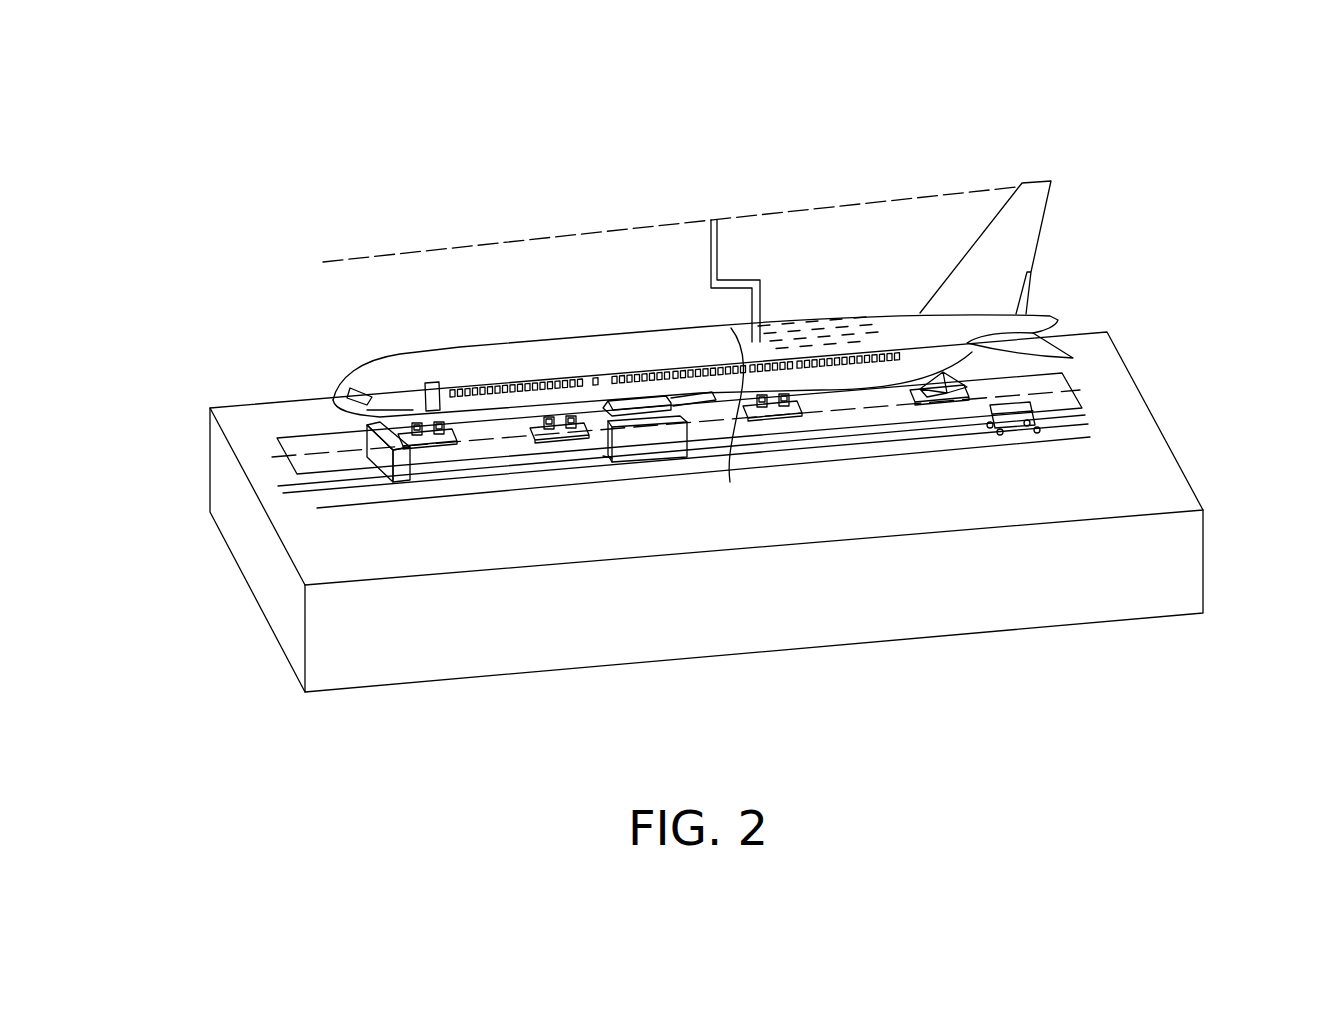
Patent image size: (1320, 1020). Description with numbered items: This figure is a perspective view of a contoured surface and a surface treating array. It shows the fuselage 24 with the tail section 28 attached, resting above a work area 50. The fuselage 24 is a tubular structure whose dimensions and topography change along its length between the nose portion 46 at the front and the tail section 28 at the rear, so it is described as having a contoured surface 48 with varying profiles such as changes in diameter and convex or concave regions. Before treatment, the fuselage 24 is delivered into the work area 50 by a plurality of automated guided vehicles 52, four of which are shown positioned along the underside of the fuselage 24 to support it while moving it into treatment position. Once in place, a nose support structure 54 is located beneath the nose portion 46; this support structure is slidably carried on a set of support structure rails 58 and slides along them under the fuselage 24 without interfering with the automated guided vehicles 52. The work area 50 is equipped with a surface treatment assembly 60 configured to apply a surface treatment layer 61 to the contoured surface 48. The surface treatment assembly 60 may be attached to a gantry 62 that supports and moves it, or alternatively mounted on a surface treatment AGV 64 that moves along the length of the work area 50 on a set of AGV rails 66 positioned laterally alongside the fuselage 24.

The fuselage 24 is at (343, 319).
The tail section 28 is at (1074, 203).
The nose portion 46 is at (343, 392).
The contoured surface 48 is at (469, 341).
The work area 50 is at (1133, 438).
The automated guided vehicles 52 is at (428, 447).
The nose support structure 54 is at (403, 483).
The support structure rails 58 is at (320, 490).
The surface treatment assembly 60 is at (733, 421).
The surface treatment layer 61 is at (827, 333).
The gantry 62 is at (711, 222).
The surface treatment AGV 64 is at (1007, 400).
The AGV rails 66 is at (877, 452).